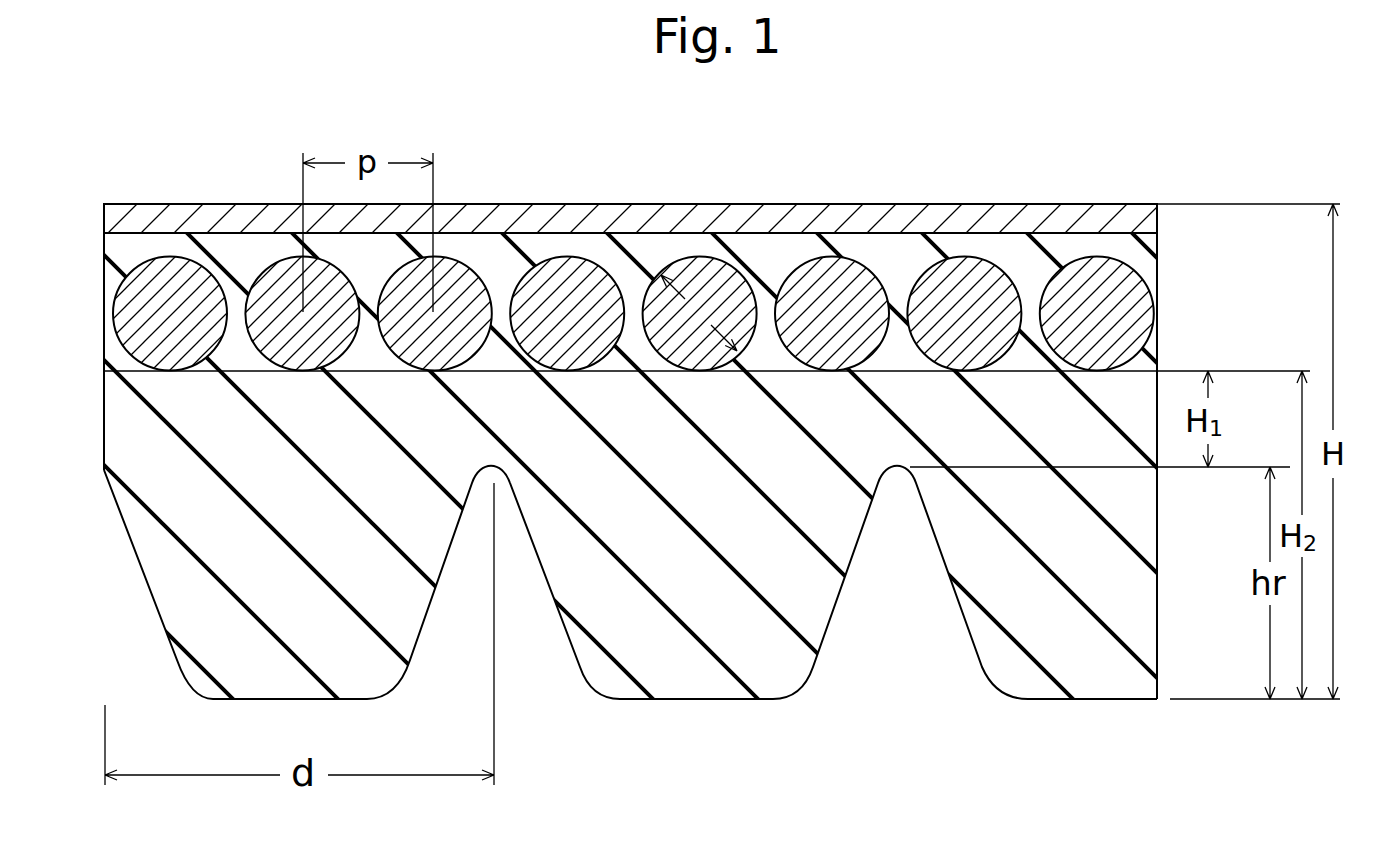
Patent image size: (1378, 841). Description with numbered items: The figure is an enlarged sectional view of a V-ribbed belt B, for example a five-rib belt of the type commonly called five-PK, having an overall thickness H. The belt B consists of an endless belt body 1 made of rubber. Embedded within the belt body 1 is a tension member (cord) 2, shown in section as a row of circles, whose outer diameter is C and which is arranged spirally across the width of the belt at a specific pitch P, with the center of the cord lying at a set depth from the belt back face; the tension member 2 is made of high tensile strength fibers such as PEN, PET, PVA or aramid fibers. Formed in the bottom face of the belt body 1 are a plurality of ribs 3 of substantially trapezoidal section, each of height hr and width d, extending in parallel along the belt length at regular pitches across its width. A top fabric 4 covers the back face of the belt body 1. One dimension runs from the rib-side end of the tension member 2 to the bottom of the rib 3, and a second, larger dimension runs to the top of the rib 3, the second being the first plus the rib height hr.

The belt body 1 is at (103, 277).
The tension member (cord) 2 is at (207, 352).
The rib 3 is at (388, 677).
The top fabric 4 is at (597, 204).
The V-ribbed belt B is at (172, 93).
The outer diameter of tension member C is at (699, 313).